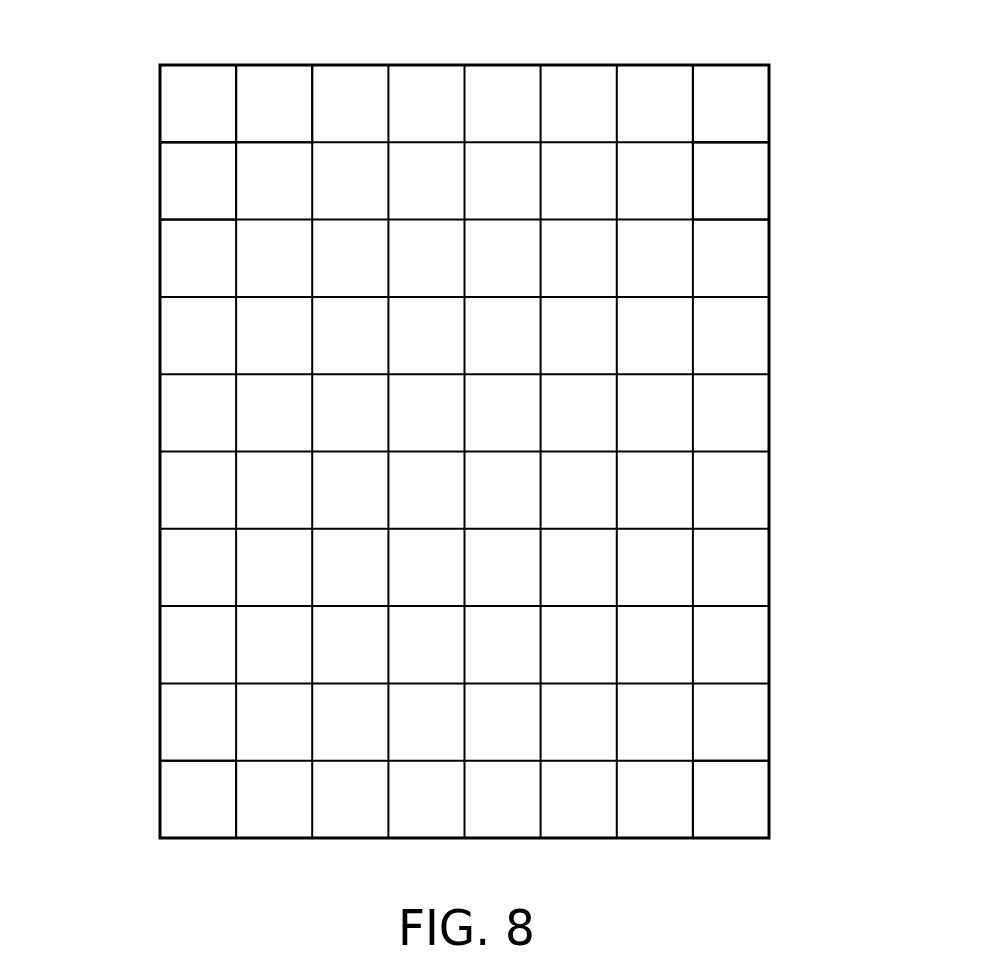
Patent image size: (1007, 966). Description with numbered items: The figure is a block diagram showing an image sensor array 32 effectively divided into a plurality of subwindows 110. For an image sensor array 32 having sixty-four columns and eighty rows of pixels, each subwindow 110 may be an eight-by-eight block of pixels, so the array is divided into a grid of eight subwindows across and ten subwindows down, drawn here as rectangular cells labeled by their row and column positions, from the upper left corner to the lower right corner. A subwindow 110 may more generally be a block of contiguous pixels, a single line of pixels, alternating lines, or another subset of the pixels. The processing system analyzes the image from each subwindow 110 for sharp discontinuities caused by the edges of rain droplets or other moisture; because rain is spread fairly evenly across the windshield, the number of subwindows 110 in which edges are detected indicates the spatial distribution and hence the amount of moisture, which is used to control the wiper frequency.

The image sensor array 32 is at (792, 258).
The subwindow 110 is at (459, 429).